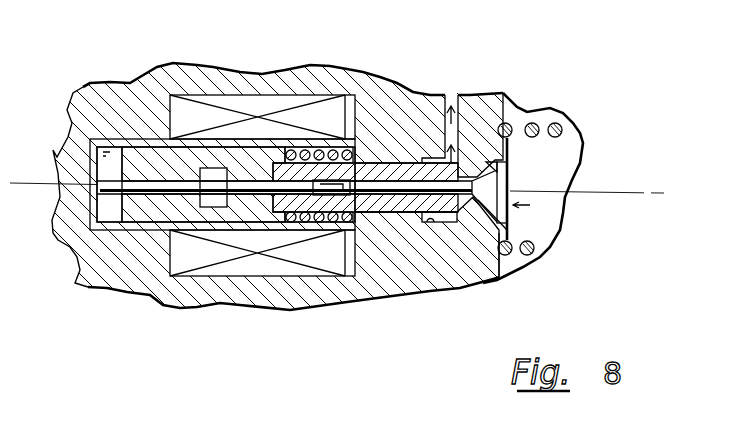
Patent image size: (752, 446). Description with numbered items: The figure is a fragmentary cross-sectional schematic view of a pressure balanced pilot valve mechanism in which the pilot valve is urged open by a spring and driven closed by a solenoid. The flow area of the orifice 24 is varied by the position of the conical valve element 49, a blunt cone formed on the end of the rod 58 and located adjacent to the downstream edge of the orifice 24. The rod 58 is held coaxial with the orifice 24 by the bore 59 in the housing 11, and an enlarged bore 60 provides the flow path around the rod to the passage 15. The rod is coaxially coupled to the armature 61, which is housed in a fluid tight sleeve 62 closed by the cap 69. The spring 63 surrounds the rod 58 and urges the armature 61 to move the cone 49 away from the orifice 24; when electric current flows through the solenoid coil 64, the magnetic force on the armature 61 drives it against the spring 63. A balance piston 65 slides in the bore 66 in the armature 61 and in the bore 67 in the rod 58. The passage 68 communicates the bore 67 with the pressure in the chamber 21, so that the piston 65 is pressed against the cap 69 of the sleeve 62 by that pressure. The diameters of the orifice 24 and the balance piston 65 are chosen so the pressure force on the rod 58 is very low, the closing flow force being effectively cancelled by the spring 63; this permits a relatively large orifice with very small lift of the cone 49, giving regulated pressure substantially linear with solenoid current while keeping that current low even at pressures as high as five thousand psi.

The housing 11 is at (478, 94).
The passage 15 is at (458, 131).
The chamber 21 is at (540, 172).
The orifice 24 is at (507, 222).
The conical valve element 49 is at (500, 228).
The rod 58 is at (482, 285).
The bore 59 is at (390, 204).
The enlarged bore 60 is at (443, 221).
The armature 61 is at (163, 210).
The fluid tight sleeve 62 is at (258, 212).
The spring 63 is at (311, 160).
The solenoid coil 64 is at (284, 236).
The balance piston 65 is at (343, 152).
The bore 66 is at (181, 180).
The bore 67 is at (343, 214).
The passage 68 is at (411, 182).
The cap 69 is at (112, 228).